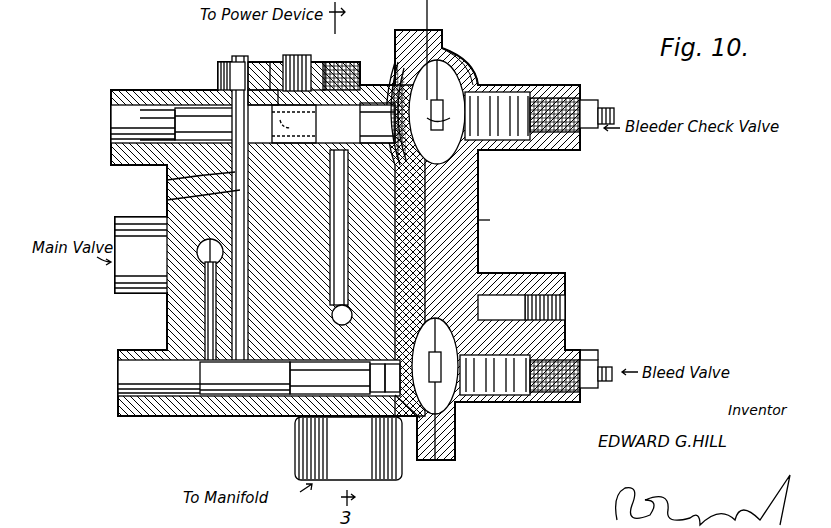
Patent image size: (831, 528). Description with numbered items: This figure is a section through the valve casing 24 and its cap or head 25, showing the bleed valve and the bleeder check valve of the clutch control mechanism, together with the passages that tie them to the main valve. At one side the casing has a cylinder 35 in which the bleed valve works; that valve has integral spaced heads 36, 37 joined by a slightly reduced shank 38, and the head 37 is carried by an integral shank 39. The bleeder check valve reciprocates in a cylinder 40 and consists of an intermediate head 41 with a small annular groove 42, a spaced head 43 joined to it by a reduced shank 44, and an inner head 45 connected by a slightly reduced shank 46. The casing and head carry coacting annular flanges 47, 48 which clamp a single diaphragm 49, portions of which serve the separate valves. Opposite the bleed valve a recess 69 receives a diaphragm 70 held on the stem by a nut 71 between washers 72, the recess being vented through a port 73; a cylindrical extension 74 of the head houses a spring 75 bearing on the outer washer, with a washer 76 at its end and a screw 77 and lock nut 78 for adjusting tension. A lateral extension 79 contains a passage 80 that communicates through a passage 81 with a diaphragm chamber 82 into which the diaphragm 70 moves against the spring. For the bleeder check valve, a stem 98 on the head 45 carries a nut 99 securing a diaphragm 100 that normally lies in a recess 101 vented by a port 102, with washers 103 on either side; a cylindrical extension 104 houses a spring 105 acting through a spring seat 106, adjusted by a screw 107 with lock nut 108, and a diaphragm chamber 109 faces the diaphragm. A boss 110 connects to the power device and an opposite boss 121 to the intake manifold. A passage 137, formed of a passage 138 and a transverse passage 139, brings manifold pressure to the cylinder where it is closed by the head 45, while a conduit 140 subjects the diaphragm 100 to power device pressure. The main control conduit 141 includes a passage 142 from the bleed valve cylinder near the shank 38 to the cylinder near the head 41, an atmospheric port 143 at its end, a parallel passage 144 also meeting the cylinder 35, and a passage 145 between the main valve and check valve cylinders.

The valve casing 24 is at (148, 90).
The cap or head 25 is at (480, 246).
The cylinder 35 is at (222, 417).
The head 36 is at (128, 378).
The head 37 is at (277, 417).
The shank 38 is at (247, 417).
The shank 39 is at (342, 396).
The cylinder 40 is at (190, 98).
The intermediate head 41 is at (262, 105).
The annular groove 42 is at (233, 123).
The spaced head 43 is at (116, 126).
The shank 44 is at (175, 123).
The inner head 45 is at (350, 78).
The shank 46 is at (290, 62).
The annular flange 47 is at (412, 32).
The annular flange 48 is at (443, 38).
The diaphragm 49 is at (426, 50).
The recess 69 is at (372, 378).
The diaphragm 70 is at (462, 415).
The nut 71 is at (435, 389).
The washers 72 is at (391, 378).
The port 73 is at (405, 420).
The cylindrical extension 74 is at (575, 403).
The spring 75 is at (498, 403).
The washer 76 is at (537, 403).
The screw 77 is at (612, 370).
The lock nut 78 is at (600, 356).
The extension 79 is at (550, 275).
The passage 80 is at (508, 275).
The passage 81 is at (480, 317).
The diaphragm chamber 82 is at (452, 445).
The stem 98 is at (377, 123).
The nut 99 is at (446, 104).
The diaphragm 100 is at (460, 75).
The recess 101 is at (478, 184).
The port 102 is at (395, 70).
The washers 103 is at (440, 139).
The cylindrical extension 104 is at (566, 88).
The spring 105 is at (514, 92).
The spring seat 106 is at (530, 150).
The screw 107 is at (614, 114).
The lock nut 108 is at (592, 100).
The diaphragm chamber 109 is at (452, 58).
The boss 110 is at (276, 62).
The boss 121 is at (300, 456).
The passage 137 is at (245, 377).
The passage 138 is at (330, 378).
The transverse passage 139 is at (496, 212).
The conduit 140 is at (294, 124).
The main control conduit 141 is at (167, 200).
The passage 142 is at (167, 180).
The port 143 is at (238, 60).
The passage 144 is at (205, 320).
The passage 145 is at (196, 258).